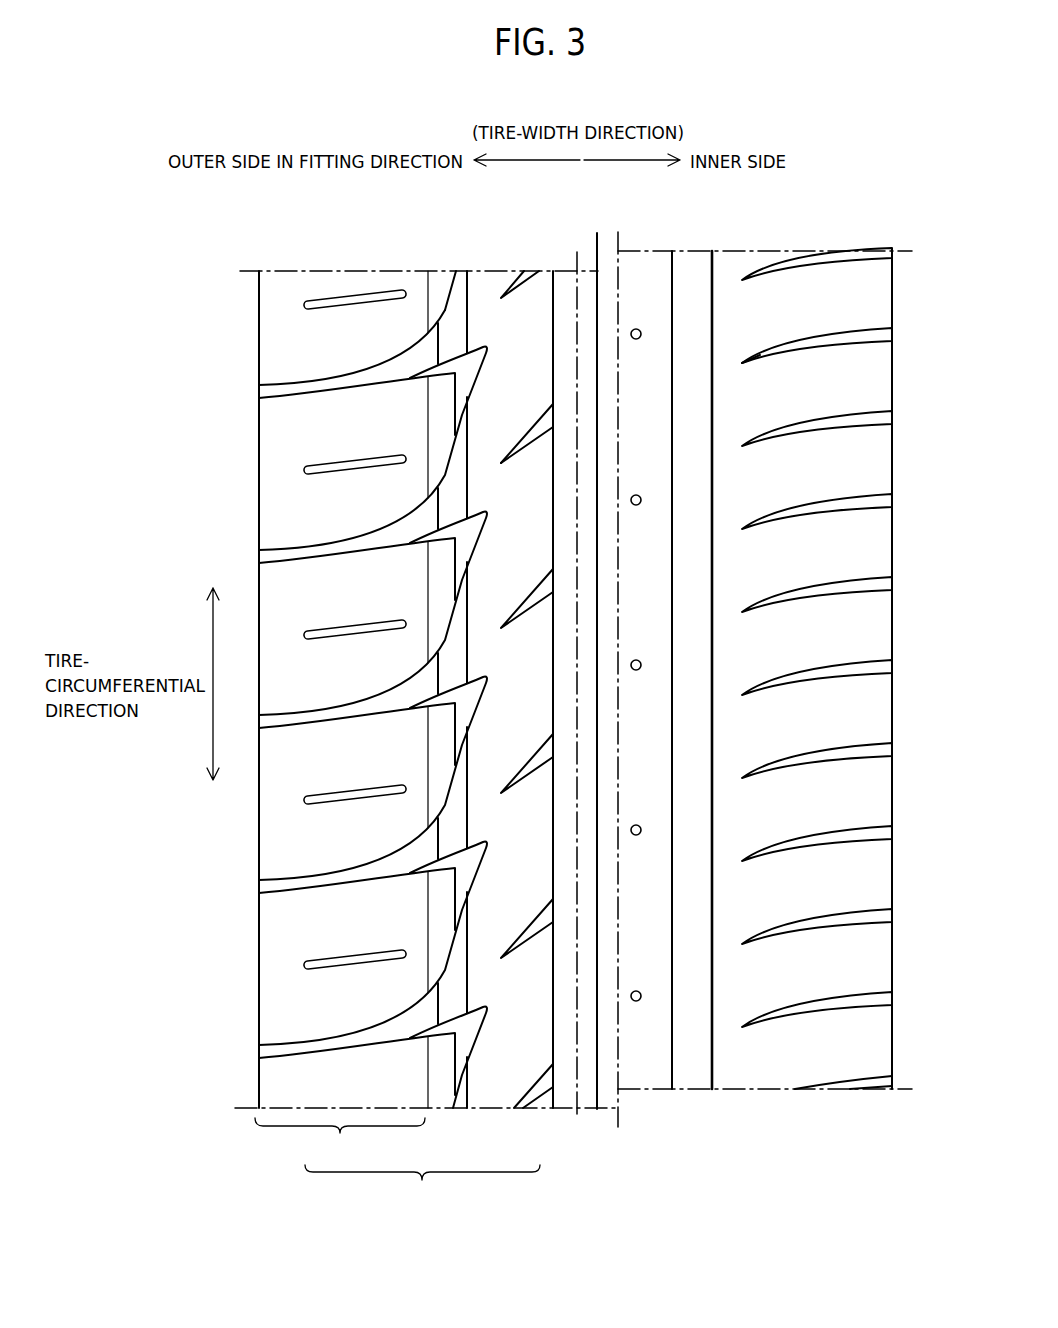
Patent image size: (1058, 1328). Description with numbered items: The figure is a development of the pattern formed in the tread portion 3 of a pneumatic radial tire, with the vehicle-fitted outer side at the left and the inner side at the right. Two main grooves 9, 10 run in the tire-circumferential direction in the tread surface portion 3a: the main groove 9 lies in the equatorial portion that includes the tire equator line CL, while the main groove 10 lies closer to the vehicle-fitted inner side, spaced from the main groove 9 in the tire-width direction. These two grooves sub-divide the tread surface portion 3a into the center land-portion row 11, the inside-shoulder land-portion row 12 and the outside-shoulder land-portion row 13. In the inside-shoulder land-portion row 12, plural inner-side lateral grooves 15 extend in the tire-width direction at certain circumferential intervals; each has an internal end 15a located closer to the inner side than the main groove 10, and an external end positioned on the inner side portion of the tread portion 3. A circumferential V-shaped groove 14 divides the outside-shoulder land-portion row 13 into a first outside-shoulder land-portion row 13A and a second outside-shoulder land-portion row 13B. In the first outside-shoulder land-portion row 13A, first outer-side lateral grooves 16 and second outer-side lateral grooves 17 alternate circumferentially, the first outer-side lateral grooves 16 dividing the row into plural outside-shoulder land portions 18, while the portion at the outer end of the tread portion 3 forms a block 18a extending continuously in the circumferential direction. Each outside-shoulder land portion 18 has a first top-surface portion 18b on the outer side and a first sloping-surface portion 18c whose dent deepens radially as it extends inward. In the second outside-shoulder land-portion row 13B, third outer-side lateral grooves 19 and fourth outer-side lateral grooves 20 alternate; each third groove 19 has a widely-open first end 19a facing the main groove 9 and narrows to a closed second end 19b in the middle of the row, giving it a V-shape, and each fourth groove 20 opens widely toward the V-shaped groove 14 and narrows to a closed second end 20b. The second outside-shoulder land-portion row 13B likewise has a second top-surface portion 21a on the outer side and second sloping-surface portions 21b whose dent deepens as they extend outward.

The tread portion 3 is at (277, 270).
The tread surface portion 3a is at (338, 291).
The main groove 9 is at (557, 1110).
The main groove 10 is at (672, 1068).
The center land-portion row 11 is at (670, 1128).
The inside-shoulder land-portion row 12 is at (765, 698).
The outside-shoulder land-portion row 13 is at (422, 1187).
The first outside-shoulder land-portion row 13A is at (340, 1142).
The second outside-shoulder land-portion row 13B is at (548, 1118).
The V-shaped groove 14 is at (453, 1010).
The inner-side lateral groove 15 is at (814, 344).
The internal end 15a is at (757, 361).
The first outer-side lateral groove 16 is at (262, 393).
The second outer-side lateral groove 17 is at (352, 477).
The outside-shoulder land portion 18 is at (260, 437).
The block 18a is at (265, 493).
The first top-surface portion 18b is at (338, 396).
The first sloping-surface portion 18c is at (440, 413).
The third outer-side lateral groove 19 is at (527, 551).
The first end 19a is at (553, 410).
The second end 19b is at (511, 440).
The fourth outer-side lateral groove 20 is at (473, 540).
The second end 20b is at (410, 542).
The second top-surface portion 21a is at (490, 284).
The second sloping-surface portion 21b is at (453, 303).
The tire equator line CL is at (577, 262).